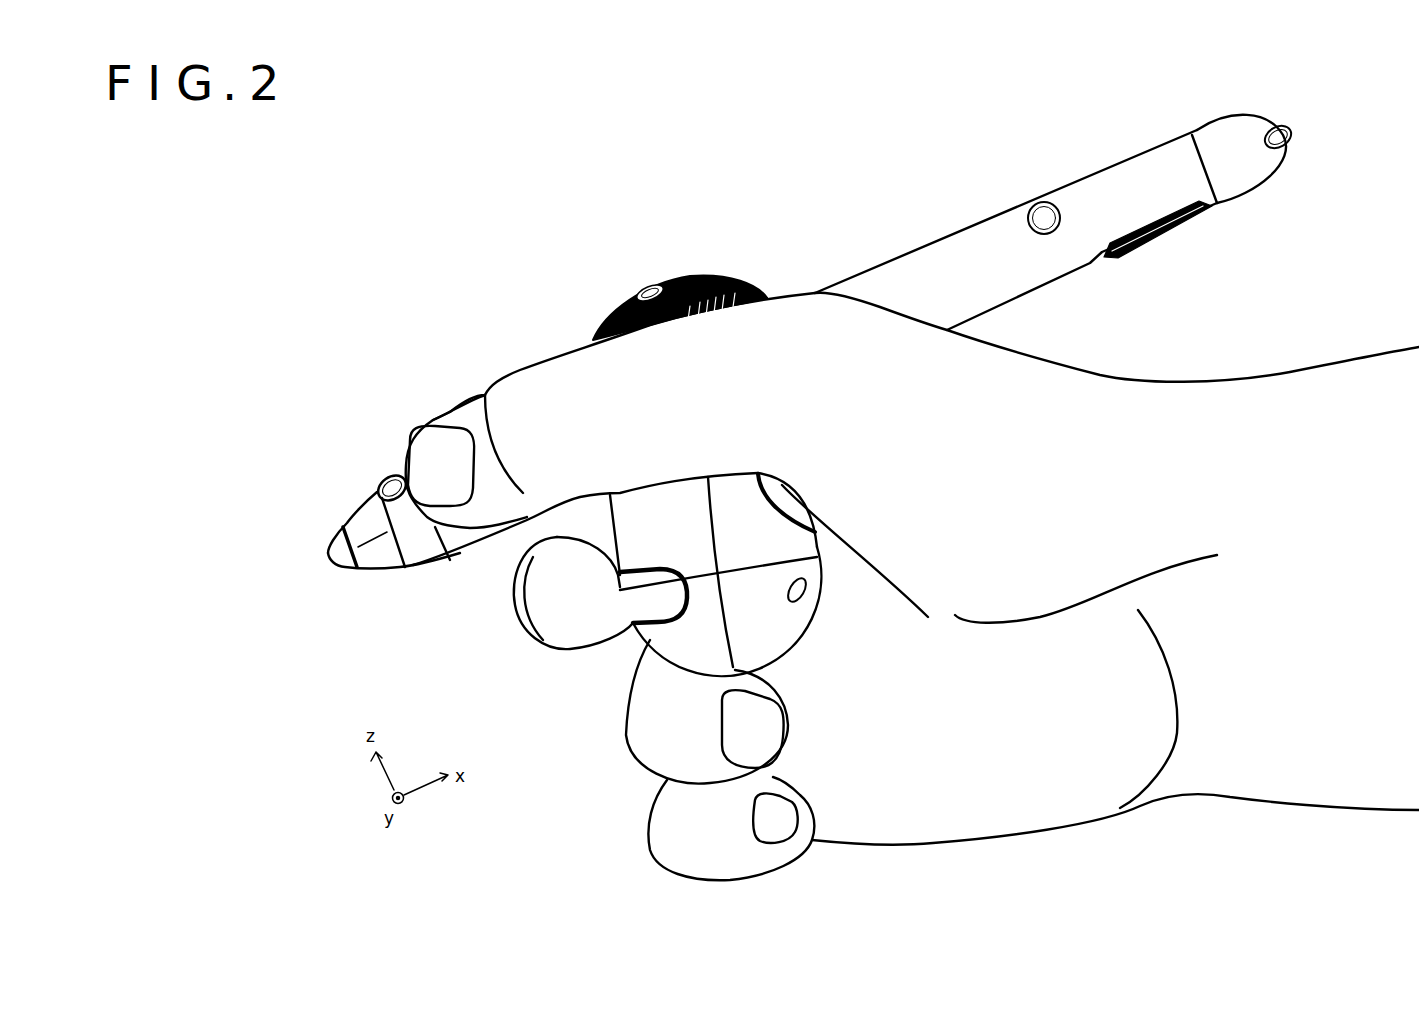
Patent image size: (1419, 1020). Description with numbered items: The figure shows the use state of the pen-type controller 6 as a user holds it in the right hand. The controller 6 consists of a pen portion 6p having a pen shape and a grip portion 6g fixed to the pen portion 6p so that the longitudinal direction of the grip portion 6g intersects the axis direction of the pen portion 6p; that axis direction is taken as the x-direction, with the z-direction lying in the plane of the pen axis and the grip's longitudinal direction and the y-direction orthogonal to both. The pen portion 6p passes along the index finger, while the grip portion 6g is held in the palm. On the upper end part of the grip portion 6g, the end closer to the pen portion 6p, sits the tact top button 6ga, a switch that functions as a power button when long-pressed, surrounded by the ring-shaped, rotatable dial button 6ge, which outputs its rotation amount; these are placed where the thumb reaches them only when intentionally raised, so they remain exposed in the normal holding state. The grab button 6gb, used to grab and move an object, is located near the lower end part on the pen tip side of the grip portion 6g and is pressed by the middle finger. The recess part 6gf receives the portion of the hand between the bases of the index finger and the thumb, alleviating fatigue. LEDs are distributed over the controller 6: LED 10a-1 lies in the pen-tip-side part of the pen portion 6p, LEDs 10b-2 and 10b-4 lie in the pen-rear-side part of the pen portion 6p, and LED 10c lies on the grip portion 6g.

The controller 6 is at (955, 248).
The pen portion 6p is at (920, 265).
The grip portion 6g is at (655, 633).
The tact top button 6ga is at (683, 282).
The grab button 6gb is at (657, 577).
The dial button 6ge is at (733, 283).
The recess part 6gf is at (787, 517).
The LED 10a-1 is at (390, 475).
The LED 10b-2 is at (1043, 202).
The LED 10b-4 is at (1293, 108).
The LED 10c is at (647, 283).